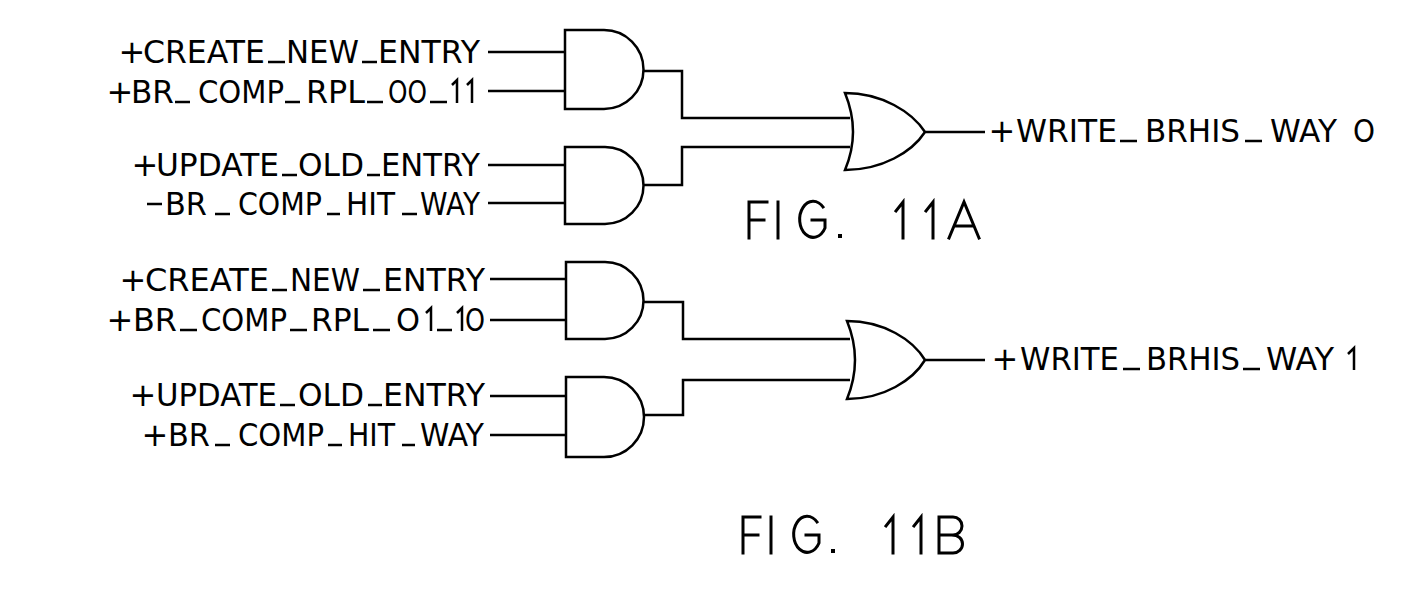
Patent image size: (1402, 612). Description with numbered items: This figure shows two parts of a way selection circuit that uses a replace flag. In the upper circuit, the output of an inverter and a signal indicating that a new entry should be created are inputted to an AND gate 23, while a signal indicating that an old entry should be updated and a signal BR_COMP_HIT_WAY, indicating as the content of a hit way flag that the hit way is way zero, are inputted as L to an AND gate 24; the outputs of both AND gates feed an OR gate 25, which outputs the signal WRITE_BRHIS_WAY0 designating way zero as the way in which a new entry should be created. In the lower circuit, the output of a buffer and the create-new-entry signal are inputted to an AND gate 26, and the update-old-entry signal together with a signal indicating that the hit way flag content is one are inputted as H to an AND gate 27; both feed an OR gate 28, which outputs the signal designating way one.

In FIG. 11A, the AND gate 23 is at (622, 31).
In FIG. 11A, the AND gate 24 is at (618, 148).
In FIG. 11A, the OR gate 25 is at (888, 93).
In FIG. 11B, the AND gate 26 is at (622, 337).
In FIG. 11B, the AND gate 27 is at (607, 457).
In FIG. 11B, the OR gate 28 is at (905, 333).